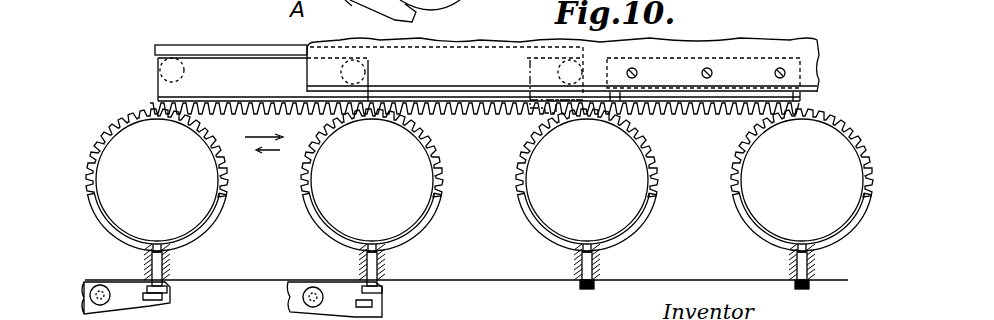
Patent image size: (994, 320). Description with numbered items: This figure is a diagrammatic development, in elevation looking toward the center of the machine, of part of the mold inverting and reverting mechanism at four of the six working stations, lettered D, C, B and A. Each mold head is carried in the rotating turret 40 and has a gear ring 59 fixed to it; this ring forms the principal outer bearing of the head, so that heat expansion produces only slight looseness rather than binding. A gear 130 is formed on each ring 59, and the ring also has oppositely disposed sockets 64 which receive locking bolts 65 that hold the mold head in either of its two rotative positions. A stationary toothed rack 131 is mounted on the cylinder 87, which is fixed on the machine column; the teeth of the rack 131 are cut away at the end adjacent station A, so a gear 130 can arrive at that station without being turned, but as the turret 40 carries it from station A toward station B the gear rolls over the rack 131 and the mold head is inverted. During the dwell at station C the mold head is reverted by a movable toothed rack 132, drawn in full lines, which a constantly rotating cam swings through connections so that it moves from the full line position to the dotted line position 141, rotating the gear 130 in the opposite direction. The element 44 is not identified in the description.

The turret 40 is at (513, 273).
The arm 44 is at (386, 8).
The gear ring 59 is at (425, 226).
The sockets 64 is at (397, 247).
The locking bolts 65 is at (372, 288).
The cylinder 87 is at (807, 70).
The gear 130 is at (128, 116).
The stationary toothed rack 131 is at (705, 108).
The movable toothed rack 132 is at (240, 110).
The dotted line position 141 is at (533, 110).